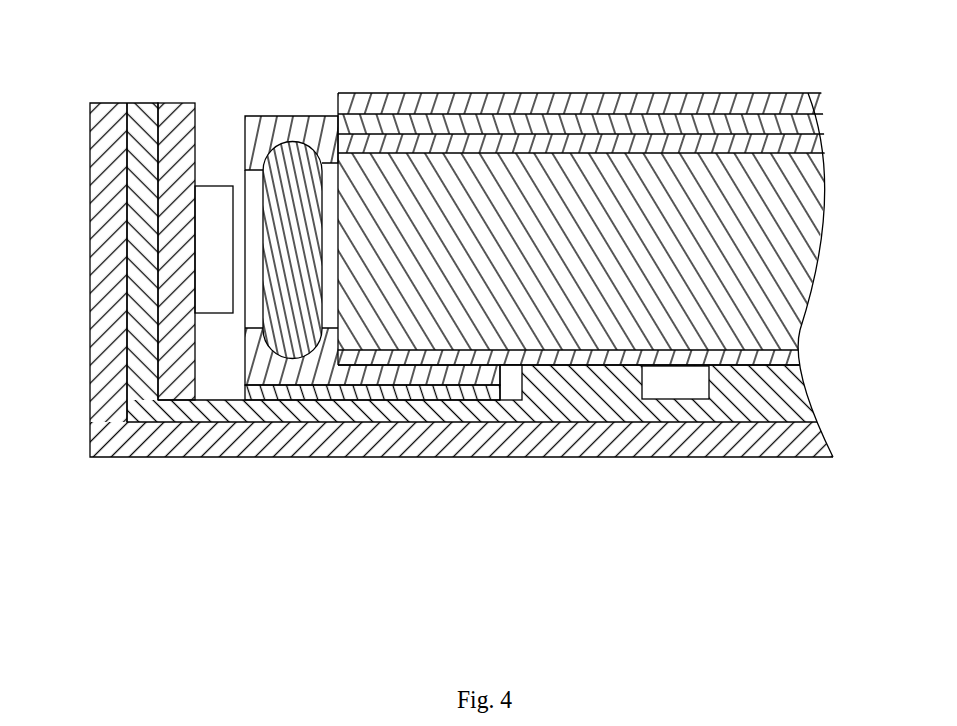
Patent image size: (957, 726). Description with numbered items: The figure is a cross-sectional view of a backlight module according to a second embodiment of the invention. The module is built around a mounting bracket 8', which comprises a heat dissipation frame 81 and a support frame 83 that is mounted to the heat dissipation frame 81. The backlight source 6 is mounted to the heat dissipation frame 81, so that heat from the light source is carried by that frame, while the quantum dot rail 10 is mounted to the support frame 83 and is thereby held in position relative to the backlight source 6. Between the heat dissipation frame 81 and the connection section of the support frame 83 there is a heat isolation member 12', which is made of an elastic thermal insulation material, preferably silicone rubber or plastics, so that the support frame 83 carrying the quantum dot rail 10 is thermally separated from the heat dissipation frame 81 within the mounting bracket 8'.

The backlight source 6 is at (168, 243).
The mounting bracket 8' is at (510, 390).
The quantum dot rail 10 is at (291, 150).
The heat isolation member 12' is at (372, 456).
The heat dissipation frame 81 is at (138, 353).
The support frame 83 is at (277, 128).